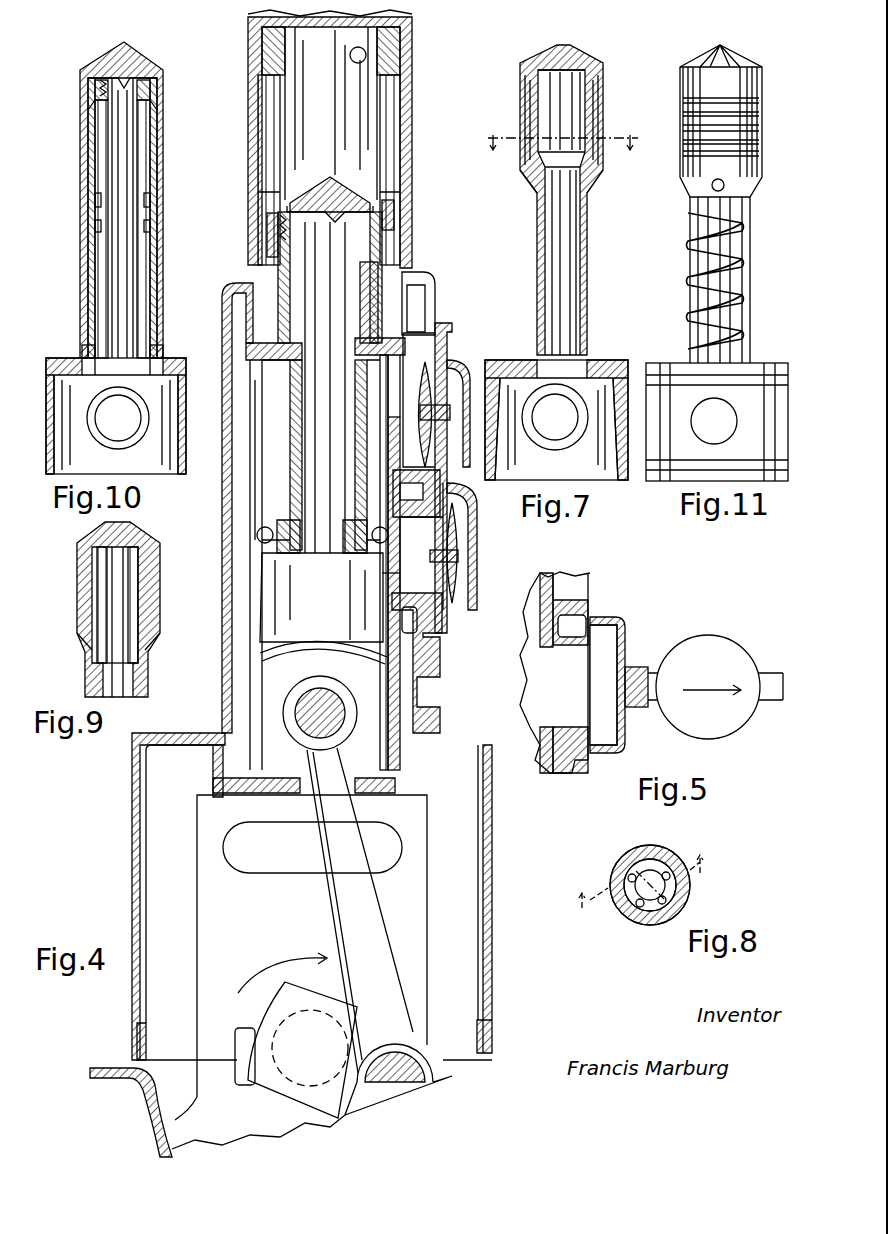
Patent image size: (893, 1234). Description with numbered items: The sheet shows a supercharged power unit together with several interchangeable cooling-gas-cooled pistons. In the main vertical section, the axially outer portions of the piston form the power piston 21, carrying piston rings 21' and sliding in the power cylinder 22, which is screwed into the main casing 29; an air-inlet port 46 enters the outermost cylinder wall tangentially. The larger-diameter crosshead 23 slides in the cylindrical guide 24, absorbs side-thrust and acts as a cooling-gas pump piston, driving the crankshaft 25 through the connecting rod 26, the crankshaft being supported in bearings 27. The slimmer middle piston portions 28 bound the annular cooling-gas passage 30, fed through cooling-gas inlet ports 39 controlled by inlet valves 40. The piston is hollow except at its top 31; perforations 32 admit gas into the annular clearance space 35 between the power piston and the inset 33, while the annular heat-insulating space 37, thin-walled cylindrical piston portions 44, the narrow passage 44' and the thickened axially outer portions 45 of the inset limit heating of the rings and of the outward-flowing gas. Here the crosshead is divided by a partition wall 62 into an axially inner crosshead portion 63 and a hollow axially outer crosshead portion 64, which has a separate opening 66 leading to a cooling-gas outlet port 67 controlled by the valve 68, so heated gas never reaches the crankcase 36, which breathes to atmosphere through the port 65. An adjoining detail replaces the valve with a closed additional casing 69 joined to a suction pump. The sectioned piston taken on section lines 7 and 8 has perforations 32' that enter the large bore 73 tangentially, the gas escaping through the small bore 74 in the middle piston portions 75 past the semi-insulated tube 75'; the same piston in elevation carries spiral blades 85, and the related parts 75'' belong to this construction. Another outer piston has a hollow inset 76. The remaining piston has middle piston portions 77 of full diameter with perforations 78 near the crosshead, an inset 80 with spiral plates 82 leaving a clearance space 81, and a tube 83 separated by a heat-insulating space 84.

In FIG. 8, the section line 7— 7 is at (642, 888).
In FIG. 7, the section line 8— 8 is at (561, 137).
In FIG. 10, the power piston 21 is at (98, 200).
In FIG. 9, the power piston 21 is at (137, 609).
In FIG. 4, the power piston 21 is at (364, 277).
In FIG. 7, the power piston 21 is at (582, 200).
In FIG. 11, the power piston 21 is at (695, 260).
In FIG. 8, the power piston 21 is at (631, 885).
In FIG. 10, the piston rings 21' is at (148, 115).
In FIG. 4, the piston rings 21' is at (420, 297).
In FIG. 7, the piston rings 21' is at (539, 120).
In FIG. 11, the piston rings 21' is at (742, 121).
In FIG. 4, the power cylinder 22 is at (343, 125).
In FIG. 10, the crosshead 23 is at (52, 418).
In FIG. 7, the crosshead 23 is at (613, 360).
In FIG. 11, the crosshead 23 is at (747, 382).
In FIG. 4, the cylindrical guide 24 is at (395, 633).
In FIG. 5, the cylindrical guide 24 is at (550, 573).
In FIG. 4, the crankshaft 25 is at (305, 1078).
In FIG. 4, the connecting rod 26 is at (365, 905).
In FIG. 4, the bearings 27 is at (235, 1063).
In FIG. 4, the middle piston portions 28 is at (292, 412).
In FIG. 4, the main casing 29 is at (410, 75).
In FIG. 5, the main casing 29 is at (568, 612).
In FIG. 4, the cooling-gas passage 30 is at (275, 470).
In FIG. 10, the piston top 31 is at (124, 57).
In FIG. 4, the piston top 31 is at (323, 183).
In FIG. 7, the piston top 31 is at (553, 50).
In FIG. 4, the perforations 32 is at (419, 303).
In FIG. 9, the perforations 32' is at (141, 645).
In FIG. 7, the perforations 32' is at (542, 189).
In FIG. 11, the perforations 32' is at (758, 186).
In FIG. 8, the perforations 32' is at (631, 909).
In FIG. 4, the inset 33 is at (300, 490).
In FIG. 4, the annular clearance space 35 is at (383, 248).
In FIG. 4, the crankcase 36 is at (140, 1098).
In FIG. 4, the annular heat-insulating space 37 is at (298, 387).
In FIG. 4, the cooling-gas inlet ports 39 is at (442, 382).
In FIG. 4, the inlet valves 40 is at (424, 365).
In FIG. 10, the thin-walled cylindrical piston portions 44 is at (172, 79).
In FIG. 4, the thin-walled cylindrical piston portions 44 is at (242, 227).
In FIG. 10, the narrow passage 44' is at (70, 92).
In FIG. 4, the narrow passage 44' is at (418, 207).
In FIG. 10, the thickened axially outer portions of the inset 45 is at (95, 97).
In FIG. 4, the thickened axially outer portions of the inset 45 is at (282, 215).
In FIG. 4, the air-inlet port 46 is at (368, 53).
In FIG. 4, the partition wall 62 is at (303, 638).
In FIG. 4, the axially inner crosshead portion 63 is at (260, 677).
In FIG. 4, the axially outer crosshead portion 64 is at (262, 585).
In FIG. 4, the port 65 is at (262, 830).
In FIG. 4, the separate opening 66 is at (388, 573).
In FIG. 4, the cooling-gas outlet port 67 is at (440, 533).
In FIG. 5, the cooling-gas outlet port 67 is at (592, 690).
In FIG. 4, the valve 68 is at (457, 603).
In FIG. 5, the additional casing 69 is at (615, 625).
In FIG. 7, the large bore 73 is at (563, 92).
In FIG. 7, the small bore 74 is at (567, 187).
In FIG. 9, the middle piston portions 75 is at (148, 678).
In FIG. 7, the middle piston portions 75 is at (593, 262).
In FIG. 11, the middle piston portions 75 is at (752, 280).
In FIG. 7, the tube 75' is at (610, 321).
In FIG. 7, the stem portion 75'' is at (612, 291).
In FIG. 9, the hollow inset 76 is at (103, 585).
In FIG. 10, the middle piston portions 77 is at (155, 267).
In FIG. 10, the perforations 78 is at (83, 340).
In FIG. 10, the inset 80 is at (98, 282).
In FIG. 10, the clearance space 81 is at (92, 253).
In FIG. 10, the spiral plates 82 is at (101, 196).
In FIG. 10, the tube 83 is at (133, 293).
In FIG. 10, the heat-insulating space 84 is at (127, 313).
In FIG. 11, the spiral blades 85 is at (745, 300).